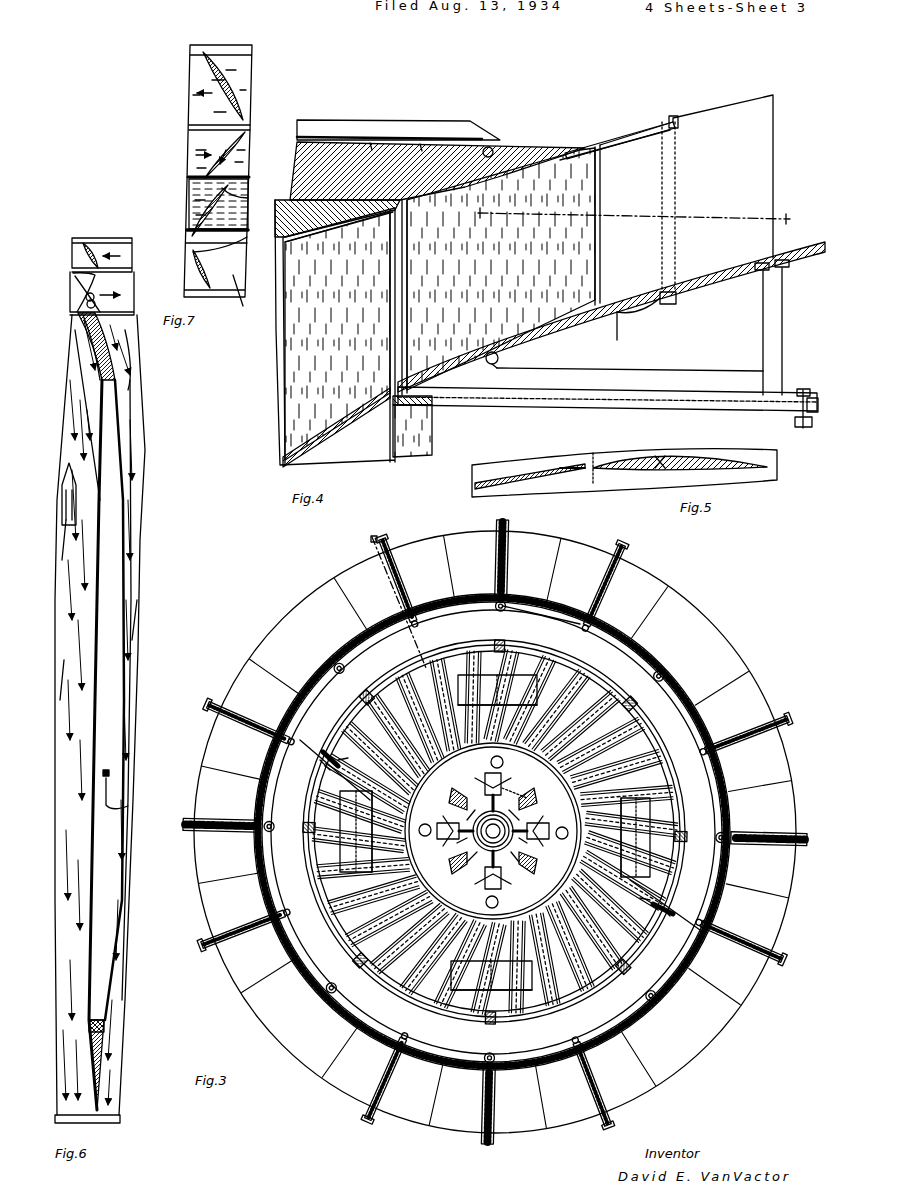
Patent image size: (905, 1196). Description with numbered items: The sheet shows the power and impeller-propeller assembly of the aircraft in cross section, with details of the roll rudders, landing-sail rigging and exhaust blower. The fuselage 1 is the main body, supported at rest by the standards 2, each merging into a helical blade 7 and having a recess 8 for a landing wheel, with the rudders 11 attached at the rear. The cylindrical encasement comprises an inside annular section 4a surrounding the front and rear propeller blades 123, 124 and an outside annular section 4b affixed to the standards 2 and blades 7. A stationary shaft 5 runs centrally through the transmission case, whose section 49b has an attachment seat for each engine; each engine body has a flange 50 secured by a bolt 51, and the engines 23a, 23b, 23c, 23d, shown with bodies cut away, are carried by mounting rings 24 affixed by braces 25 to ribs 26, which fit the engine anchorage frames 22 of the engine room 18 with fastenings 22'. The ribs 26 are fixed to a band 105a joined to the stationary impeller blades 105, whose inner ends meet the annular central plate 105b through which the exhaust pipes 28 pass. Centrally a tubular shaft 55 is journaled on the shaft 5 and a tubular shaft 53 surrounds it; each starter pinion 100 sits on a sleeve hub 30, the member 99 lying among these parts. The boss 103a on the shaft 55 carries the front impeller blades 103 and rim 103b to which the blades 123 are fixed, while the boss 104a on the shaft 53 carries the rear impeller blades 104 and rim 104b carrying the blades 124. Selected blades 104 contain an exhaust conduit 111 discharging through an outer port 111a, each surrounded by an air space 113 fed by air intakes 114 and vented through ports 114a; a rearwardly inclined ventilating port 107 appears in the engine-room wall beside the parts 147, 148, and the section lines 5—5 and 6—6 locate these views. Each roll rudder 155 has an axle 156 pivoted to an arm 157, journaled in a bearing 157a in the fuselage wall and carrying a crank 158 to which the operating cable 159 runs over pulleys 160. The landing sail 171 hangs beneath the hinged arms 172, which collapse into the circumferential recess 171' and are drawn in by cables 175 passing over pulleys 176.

In FIG. 6, the fuselage 1 is at (101, 619).
In FIG. 4, the fuselage 1 is at (548, 322).
In FIG. 3, the fuselage 1 is at (722, 770).
In FIG. 6, the standards 2 is at (126, 672).
In FIG. 3, the standards 2 is at (482, 1118).
In FIG. 4, the inside annular section 4a is at (325, 222).
In FIG. 4, the outside annular section 4b is at (520, 168).
In FIG. 3, the stationary shaft 5 is at (390, 604).
In FIG. 4, the section line 6 is at (632, 207).
In FIG. 6, the helical blade 7 is at (88, 355).
In FIG. 4, the helical blade 7 is at (498, 271).
In FIG. 5, the helical blade 7 is at (566, 475).
In FIG. 6, the recesses 8 is at (106, 745).
In FIG. 6, the rudders 11 is at (93, 1068).
In FIG. 4, the engine room 18 is at (732, 327).
In FIG. 4, the engine anchorage frames 22 is at (608, 384).
In FIG. 3, the engine anchorage frames 22 is at (498, 835).
In FIG. 4, the bolt 22' is at (802, 400).
In FIG. 3, the box side 23a is at (356, 831).
In FIG. 3, the box side 23b is at (497, 695).
In FIG. 3, the box side 23c is at (634, 837).
In FIG. 3, the box side 23d is at (470, 990).
In FIG. 3, the mounting ring 24 is at (495, 832).
In FIG. 3, the braces 25 is at (494, 832).
In FIG. 4, the ribs 26 is at (500, 410).
In FIG. 3, the ribs 26 is at (488, 837).
In FIG. 3, the exhaust pipe 28 is at (425, 824).
In FIG. 3, the sleeve hub 30 is at (545, 842).
In FIG. 3, the transmission case section 49b is at (462, 862).
In FIG. 3, the flange 50 is at (462, 878).
In FIG. 3, the gear 51 is at (529, 850).
In FIG. 3, the tubular shaft 53 is at (457, 846).
In FIG. 3, the tubular shaft 55 is at (480, 800).
In FIG. 3, the gear 99 is at (532, 795).
In FIG. 3, the pinion 100 is at (500, 834).
In FIG. 7, the impeller blades 103 is at (233, 96).
In FIG. 7, the boss 103a is at (191, 100).
In FIG. 6, the encircling rim 103b is at (108, 250).
In FIG. 7, the impeller blades 104 is at (245, 137).
In FIG. 4, the impeller blades 104 is at (330, 447).
In FIG. 7, the boss 104a is at (192, 166).
In FIG. 6, the encircling rim 104b is at (137, 295).
In FIG. 4, the encircling rim 104b is at (382, 392).
In FIG. 7, the stationary impeller blades 105 is at (247, 237).
In FIG. 4, the stationary impeller blades 105 is at (433, 446).
In FIG. 3, the stationary impeller blades 105 is at (370, 895).
In FIG. 4, the band 105a is at (430, 405).
In FIG. 3, the band 105a is at (410, 1000).
In FIG. 7, the annular central plate 105b is at (253, 298).
In FIG. 3, the annular central plate 105b is at (493, 831).
In FIG. 6, the ventilating ports 107 is at (62, 503).
In FIG. 7, the exhaust conduit 111 is at (240, 193).
In FIG. 6, the outer port 111a is at (108, 299).
In FIG. 7, the air space 113 is at (190, 216).
In FIG. 7, the air intakes 114 is at (240, 157).
In FIG. 6, the ports 114a is at (92, 312).
In FIG. 6, the front propeller helical blades 123 is at (86, 244).
In FIG. 6, the rear propeller helical blades 124 is at (75, 278).
In FIG. 4, the rear propeller helical blades 124 is at (335, 332).
In FIG. 6, the bracket 147 is at (128, 806).
In FIG. 6, the pin 148 is at (110, 774).
In FIG. 4, the rudders 155 is at (684, 200).
In FIG. 5, the rudders 155 is at (688, 468).
In FIG. 3, the rudders 155 is at (588, 1078).
In FIG. 4, the axle 156 is at (672, 200).
In FIG. 5, the axle 156 is at (658, 456).
In FIG. 4, the arm 157 is at (612, 138).
In FIG. 3, the arm 157 is at (615, 556).
In FIG. 4, the bearing 157a is at (664, 290).
In FIG. 4, the crank 158 is at (640, 310).
In FIG. 3, the crank 158 is at (492, 832).
In FIG. 4, the operating cable 159 is at (606, 326).
In FIG. 3, the operating cable 159 is at (541, 618).
In FIG. 3, the pulleys 160 is at (494, 831).
In FIG. 4, the landing sail 171 is at (385, 149).
In FIG. 4, the circumferential recess 171' is at (434, 149).
In FIG. 4, the arms 172 is at (398, 130).
In FIG. 4, the operating cable 175 is at (614, 368).
In FIG. 5, the operating cable 175 is at (475, 482).
In FIG. 4, the pulleys 176 is at (496, 255).